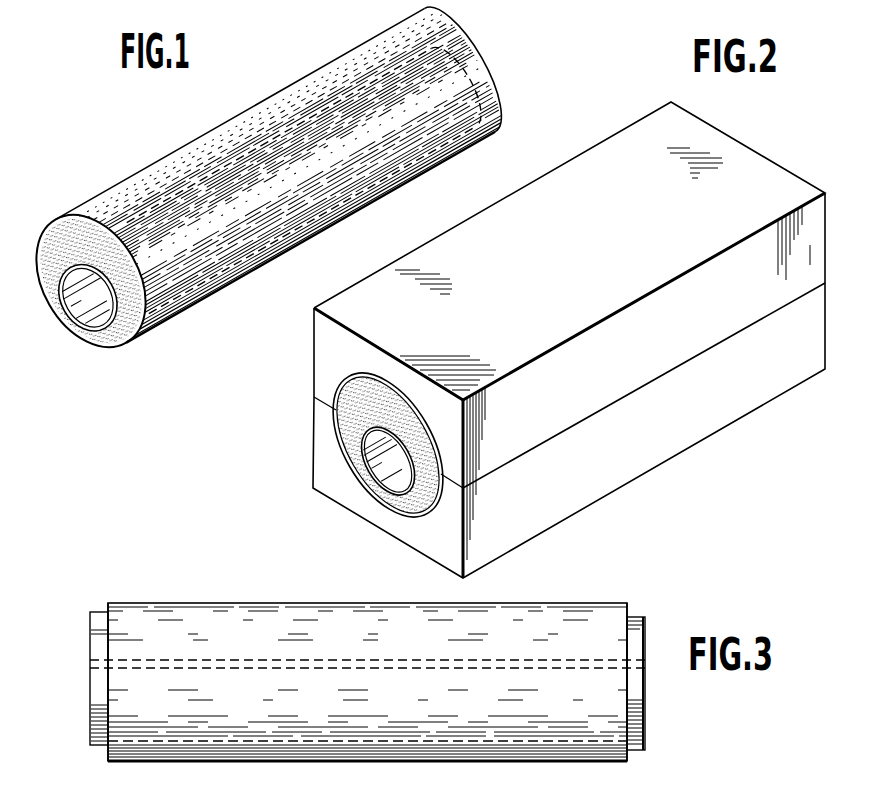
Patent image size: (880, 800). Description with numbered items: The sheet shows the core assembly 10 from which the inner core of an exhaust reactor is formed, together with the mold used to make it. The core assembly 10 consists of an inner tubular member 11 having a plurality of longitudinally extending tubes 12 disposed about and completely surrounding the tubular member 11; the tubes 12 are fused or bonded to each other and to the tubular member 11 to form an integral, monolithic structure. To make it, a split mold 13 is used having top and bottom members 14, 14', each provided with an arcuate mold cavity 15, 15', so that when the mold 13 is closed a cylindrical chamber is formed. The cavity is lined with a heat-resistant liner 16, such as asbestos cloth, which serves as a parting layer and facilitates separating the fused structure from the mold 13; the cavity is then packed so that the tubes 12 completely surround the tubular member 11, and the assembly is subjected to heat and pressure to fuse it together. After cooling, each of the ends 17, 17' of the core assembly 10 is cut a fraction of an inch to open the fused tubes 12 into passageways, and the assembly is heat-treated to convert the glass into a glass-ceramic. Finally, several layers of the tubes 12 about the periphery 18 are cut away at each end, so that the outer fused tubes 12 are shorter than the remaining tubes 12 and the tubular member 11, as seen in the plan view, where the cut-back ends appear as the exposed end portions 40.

In FIG. 1, the core assembly 10 is at (296, 57).
In FIG. 1, the inner tubular member 11 is at (103, 348).
In FIG. 1, the longitudinally extending tubes 12 is at (53, 222).
In FIG. 3, the longitudinally extending tubes 12 is at (280, 612).
In FIG. 2, the split mold 13 is at (595, 251).
In FIG. 2, the top mold member 14 is at (569, 295).
In FIG. 2, the bottom mold member 14' is at (552, 430).
In FIG. 2, the arcuate mold cavity 15 is at (367, 445).
In FIG. 2, the arcuate mold cavity 15' is at (352, 461).
In FIG. 2, the heat-resistant liner 16 is at (369, 377).
In FIG. 1, the end of core assembly 17 is at (91, 281).
In FIG. 1, the end of core assembly 17' is at (478, 69).
In FIG. 3, the periphery 18 is at (108, 600).
In FIG. 3, the pipe end 40 is at (107, 748).